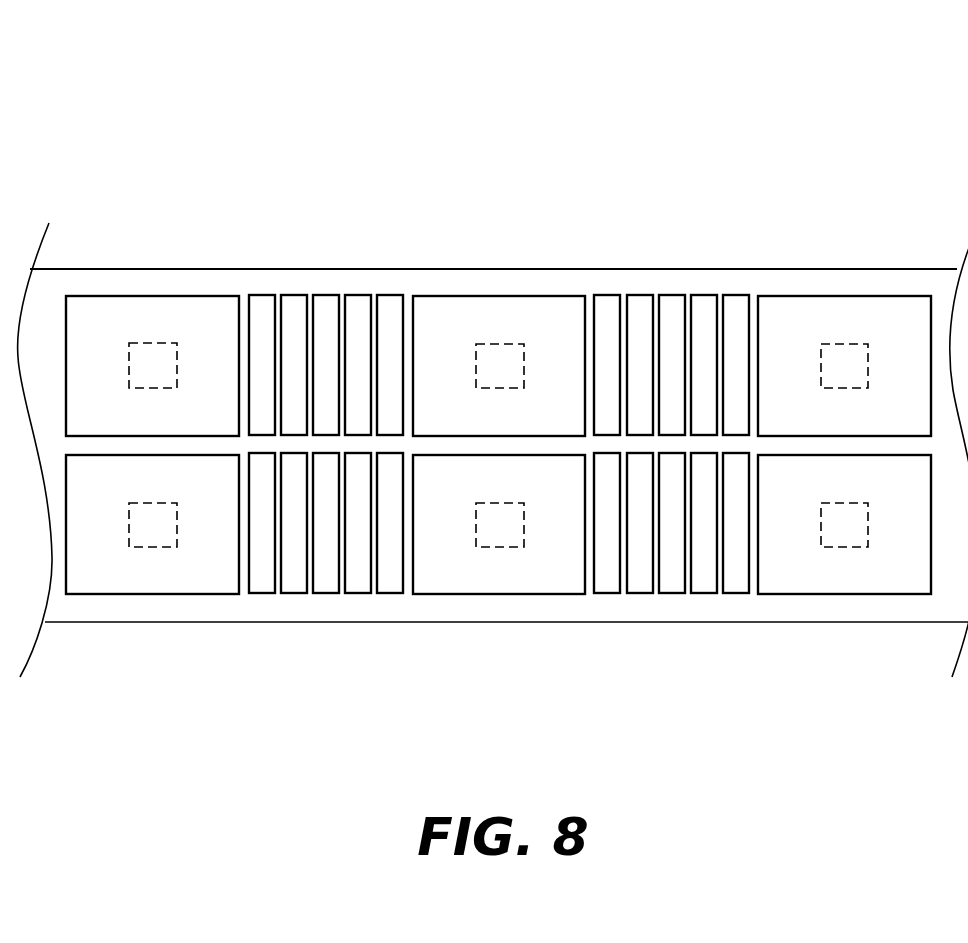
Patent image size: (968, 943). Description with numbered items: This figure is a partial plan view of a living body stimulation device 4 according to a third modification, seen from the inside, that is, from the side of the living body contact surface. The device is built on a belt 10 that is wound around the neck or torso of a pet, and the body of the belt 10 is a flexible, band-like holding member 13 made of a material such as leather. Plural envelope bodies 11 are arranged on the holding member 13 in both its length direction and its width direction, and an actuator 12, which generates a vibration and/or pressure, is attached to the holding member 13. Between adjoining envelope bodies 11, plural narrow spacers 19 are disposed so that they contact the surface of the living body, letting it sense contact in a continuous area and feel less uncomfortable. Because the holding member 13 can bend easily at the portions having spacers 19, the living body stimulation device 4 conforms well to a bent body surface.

The living body stimulation device 4 is at (541, 134).
The belt 10 is at (237, 269).
The envelope body 11 is at (178, 312).
The actuator 12 is at (148, 343).
The holding member 13 is at (412, 276).
The spacer 19 is at (327, 307).